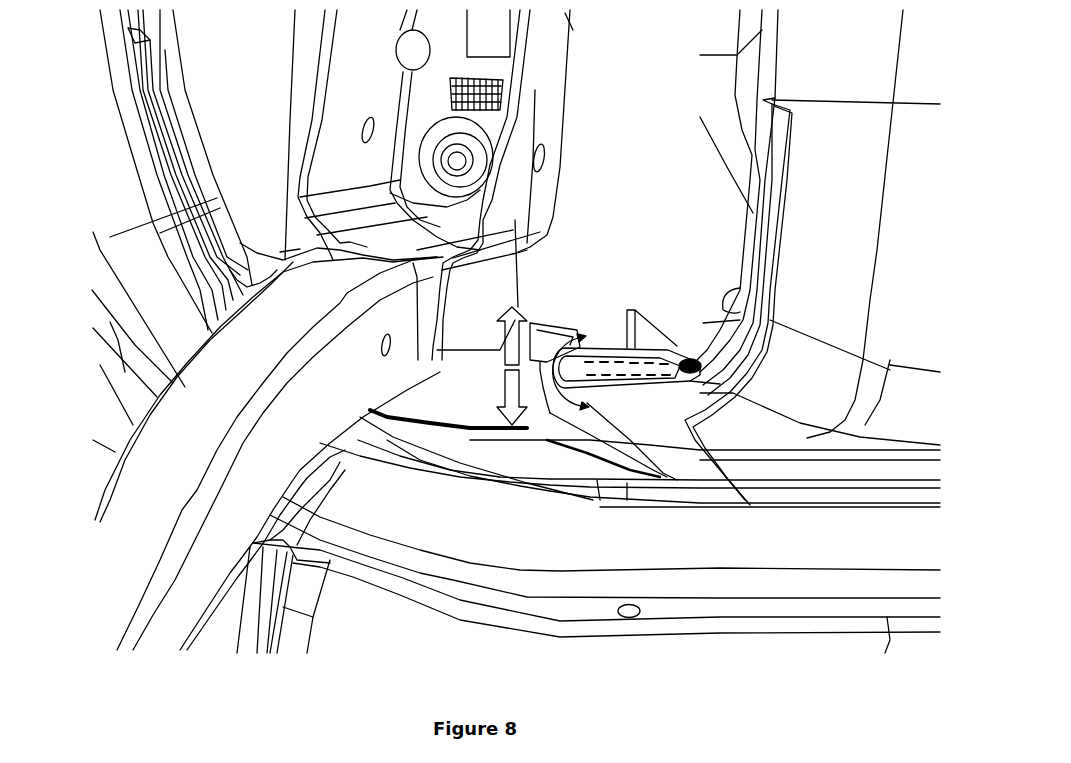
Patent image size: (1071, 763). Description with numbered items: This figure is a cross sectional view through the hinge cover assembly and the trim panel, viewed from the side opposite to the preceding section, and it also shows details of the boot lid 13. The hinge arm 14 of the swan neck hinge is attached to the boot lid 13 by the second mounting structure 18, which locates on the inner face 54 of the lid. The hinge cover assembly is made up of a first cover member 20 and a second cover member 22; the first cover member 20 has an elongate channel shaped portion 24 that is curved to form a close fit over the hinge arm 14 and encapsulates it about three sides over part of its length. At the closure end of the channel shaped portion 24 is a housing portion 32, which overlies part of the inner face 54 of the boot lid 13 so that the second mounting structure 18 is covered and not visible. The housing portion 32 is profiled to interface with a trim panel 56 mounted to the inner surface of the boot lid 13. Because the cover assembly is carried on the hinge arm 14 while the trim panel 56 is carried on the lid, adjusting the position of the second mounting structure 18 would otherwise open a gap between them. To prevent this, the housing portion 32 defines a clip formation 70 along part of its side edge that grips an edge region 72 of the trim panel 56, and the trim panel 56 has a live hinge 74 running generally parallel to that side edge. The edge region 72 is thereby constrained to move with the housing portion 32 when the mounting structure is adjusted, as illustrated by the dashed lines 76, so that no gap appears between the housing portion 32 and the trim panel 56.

The boot lid 13 is at (167, 322).
The hinge arm 14 is at (298, 280).
The second mounting structure 18 is at (533, 72).
The first cover member 20 is at (542, 417).
The second cover member 22 is at (472, 432).
The channel shaped portion 24 is at (230, 282).
The housing portion 32 is at (155, 112).
The inner face 54 is at (634, 114).
The trim panel 56 is at (753, 217).
The clip formation 70 is at (647, 347).
The edge region 72 is at (637, 377).
The live hinge 74 is at (698, 383).
The dashed lines 76 is at (615, 353).